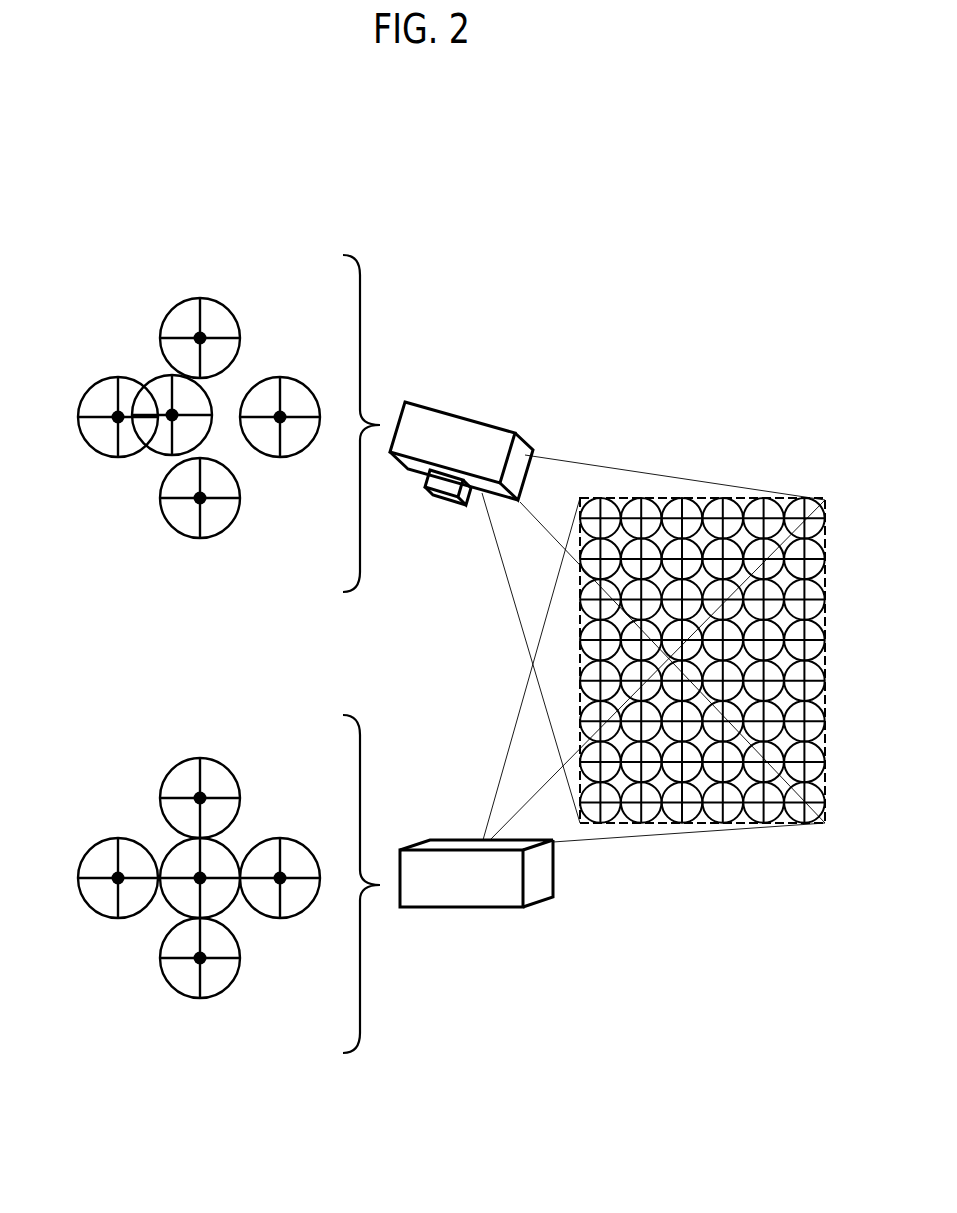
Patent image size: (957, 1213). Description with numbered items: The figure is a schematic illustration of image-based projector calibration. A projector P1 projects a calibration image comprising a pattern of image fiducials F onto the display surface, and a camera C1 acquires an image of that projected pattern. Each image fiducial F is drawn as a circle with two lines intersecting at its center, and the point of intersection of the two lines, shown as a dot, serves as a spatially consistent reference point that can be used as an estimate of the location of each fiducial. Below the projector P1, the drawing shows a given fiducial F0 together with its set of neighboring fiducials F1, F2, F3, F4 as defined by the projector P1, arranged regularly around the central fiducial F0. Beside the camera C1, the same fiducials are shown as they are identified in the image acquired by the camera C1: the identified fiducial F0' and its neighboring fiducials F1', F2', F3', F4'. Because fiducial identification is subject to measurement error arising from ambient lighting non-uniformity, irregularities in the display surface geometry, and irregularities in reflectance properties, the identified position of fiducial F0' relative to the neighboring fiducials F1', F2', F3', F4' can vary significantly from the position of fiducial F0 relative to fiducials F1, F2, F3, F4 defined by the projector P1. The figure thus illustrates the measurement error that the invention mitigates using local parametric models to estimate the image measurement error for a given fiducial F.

The image fiducial F is at (823, 630).
The fiducial F0 is at (225, 858).
The neighboring fiducial F1 is at (193, 775).
The neighboring fiducial F2 is at (292, 908).
The neighboring fiducial F3 is at (196, 987).
The neighboring fiducial F4 is at (112, 853).
The identified fiducial position F0' is at (209, 391).
The identified neighboring fiducial F1' is at (193, 309).
The identified neighboring fiducial F2' is at (292, 446).
The identified neighboring fiducial F3' is at (193, 527).
The identified neighboring fiducial F4' is at (112, 387).
The camera C1 is at (461, 453).
The projector P1 is at (476, 873).